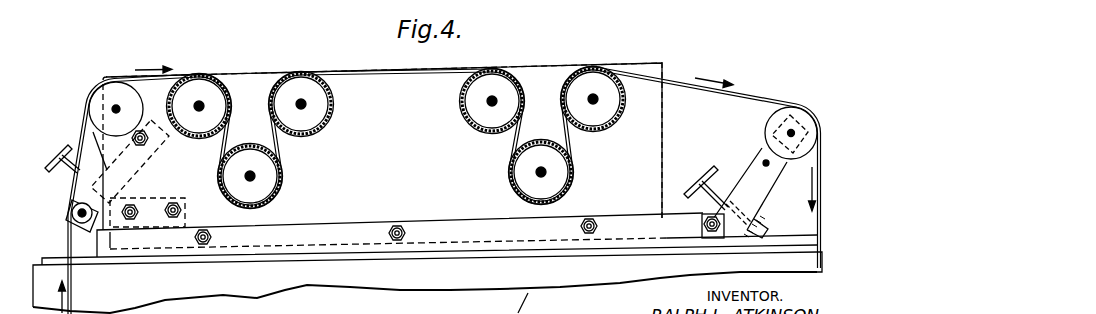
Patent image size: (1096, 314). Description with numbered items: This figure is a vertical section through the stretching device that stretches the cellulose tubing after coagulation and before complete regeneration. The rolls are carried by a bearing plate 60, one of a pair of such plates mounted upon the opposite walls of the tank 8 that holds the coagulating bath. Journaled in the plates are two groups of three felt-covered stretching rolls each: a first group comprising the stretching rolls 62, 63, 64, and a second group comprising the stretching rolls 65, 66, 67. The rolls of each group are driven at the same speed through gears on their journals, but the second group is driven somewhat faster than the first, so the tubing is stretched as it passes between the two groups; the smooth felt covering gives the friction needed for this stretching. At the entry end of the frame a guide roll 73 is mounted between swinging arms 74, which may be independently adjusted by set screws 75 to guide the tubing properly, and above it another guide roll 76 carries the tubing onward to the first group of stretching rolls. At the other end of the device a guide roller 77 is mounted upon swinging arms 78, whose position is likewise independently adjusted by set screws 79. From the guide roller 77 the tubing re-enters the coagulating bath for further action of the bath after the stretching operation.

The tank 8 is at (379, 279).
The bearing plate 60 is at (658, 128).
The stretching roll 62 is at (200, 82).
The stretching roll 63 is at (270, 178).
The stretching roll 64 is at (298, 83).
The stretching roll 65 is at (494, 80).
The stretching roll 66 is at (565, 172).
The stretching roll 67 is at (588, 76).
The guide roll 73 is at (72, 224).
The swinging arms 74 is at (97, 138).
The set screws 75 is at (55, 163).
The guide roll 76 is at (98, 100).
The guide roller 77 is at (787, 112).
The swinging arms 78 is at (750, 171).
The set screws 79 is at (693, 188).